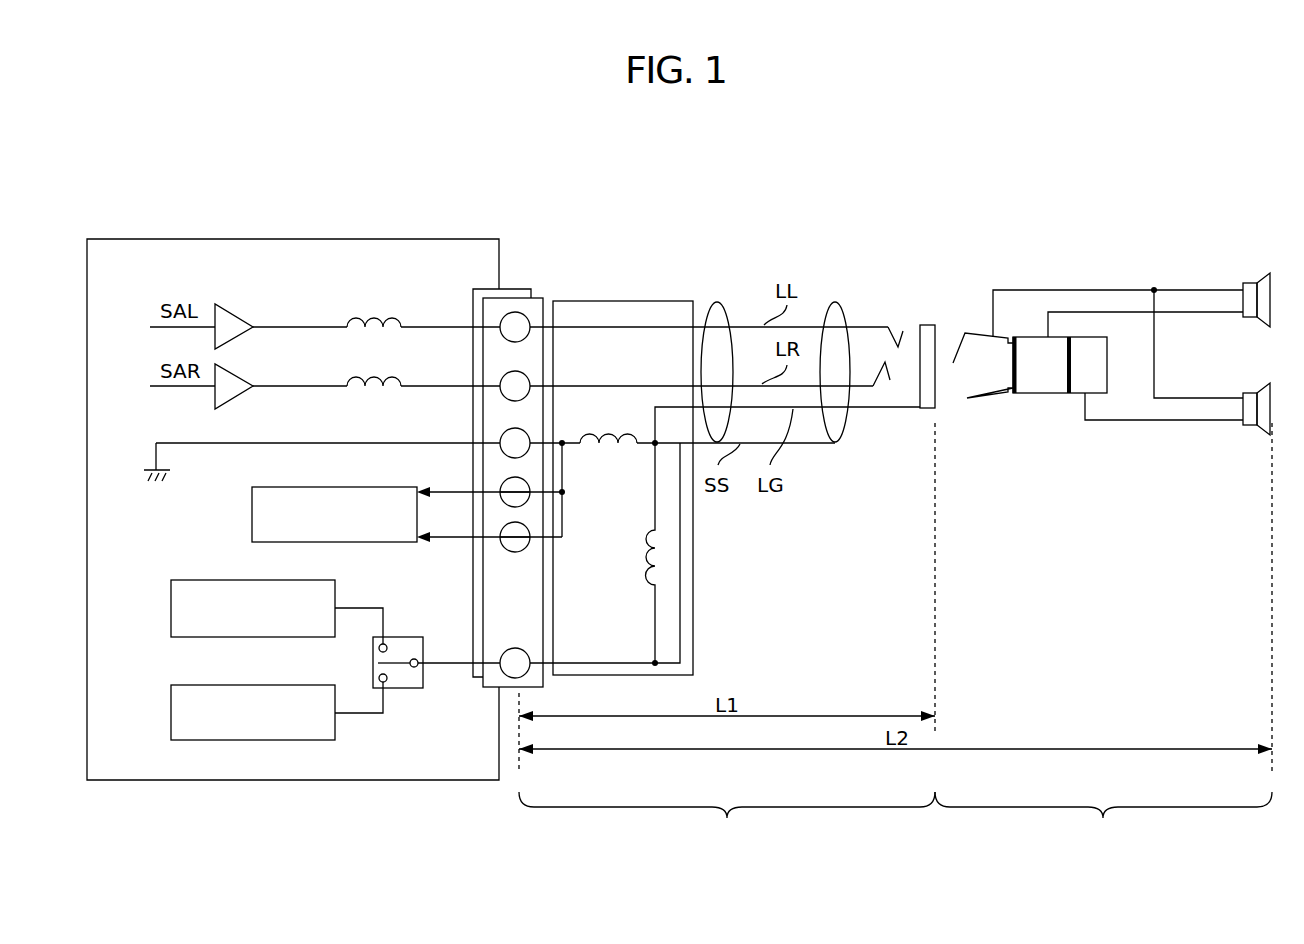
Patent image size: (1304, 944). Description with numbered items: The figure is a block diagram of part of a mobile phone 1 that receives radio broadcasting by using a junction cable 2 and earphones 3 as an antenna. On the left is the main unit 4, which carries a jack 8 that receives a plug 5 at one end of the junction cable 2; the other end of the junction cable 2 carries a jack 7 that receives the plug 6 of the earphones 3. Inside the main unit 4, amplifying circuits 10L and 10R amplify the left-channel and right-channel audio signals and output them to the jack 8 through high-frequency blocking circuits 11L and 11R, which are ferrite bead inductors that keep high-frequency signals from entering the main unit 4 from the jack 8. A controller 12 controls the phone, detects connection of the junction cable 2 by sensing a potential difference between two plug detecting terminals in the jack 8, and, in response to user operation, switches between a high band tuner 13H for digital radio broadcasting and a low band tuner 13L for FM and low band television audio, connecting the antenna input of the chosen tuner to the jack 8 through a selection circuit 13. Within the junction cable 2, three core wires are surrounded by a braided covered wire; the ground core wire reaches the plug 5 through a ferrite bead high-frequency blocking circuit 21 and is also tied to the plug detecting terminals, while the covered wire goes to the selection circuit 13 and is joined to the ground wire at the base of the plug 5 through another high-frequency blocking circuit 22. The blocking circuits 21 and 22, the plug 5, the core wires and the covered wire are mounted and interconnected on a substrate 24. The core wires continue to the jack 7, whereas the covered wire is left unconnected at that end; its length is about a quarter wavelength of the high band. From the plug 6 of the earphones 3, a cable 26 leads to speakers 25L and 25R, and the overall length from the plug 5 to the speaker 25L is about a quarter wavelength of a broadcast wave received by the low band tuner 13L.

The mobile phone 1 is at (922, 160).
The junction cable 2 is at (727, 824).
The earphones 3 is at (1103, 824).
The main unit 4 is at (404, 239).
The plug 5 is at (537, 298).
The plug 6 is at (980, 294).
The jack 7 is at (908, 294).
The jack 8 is at (514, 289).
The amplifying circuit 10L is at (245, 322).
The amplifying circuit 10R is at (245, 382).
The high-frequency blocking circuit 11L is at (392, 320).
The high-frequency blocking circuit 11R is at (392, 380).
The controller 12 is at (252, 514).
The selection circuit 13 is at (405, 637).
The high band tuner 13H is at (171, 608).
The low band tuner 13L is at (171, 713).
The high-frequency blocking circuit 21 is at (610, 440).
The high-frequency blocking circuit 22 is at (654, 552).
The substrate 24 is at (693, 585).
The speaker 25L is at (1263, 277).
The speaker 25R is at (1263, 386).
The cable 26 is at (1102, 446).